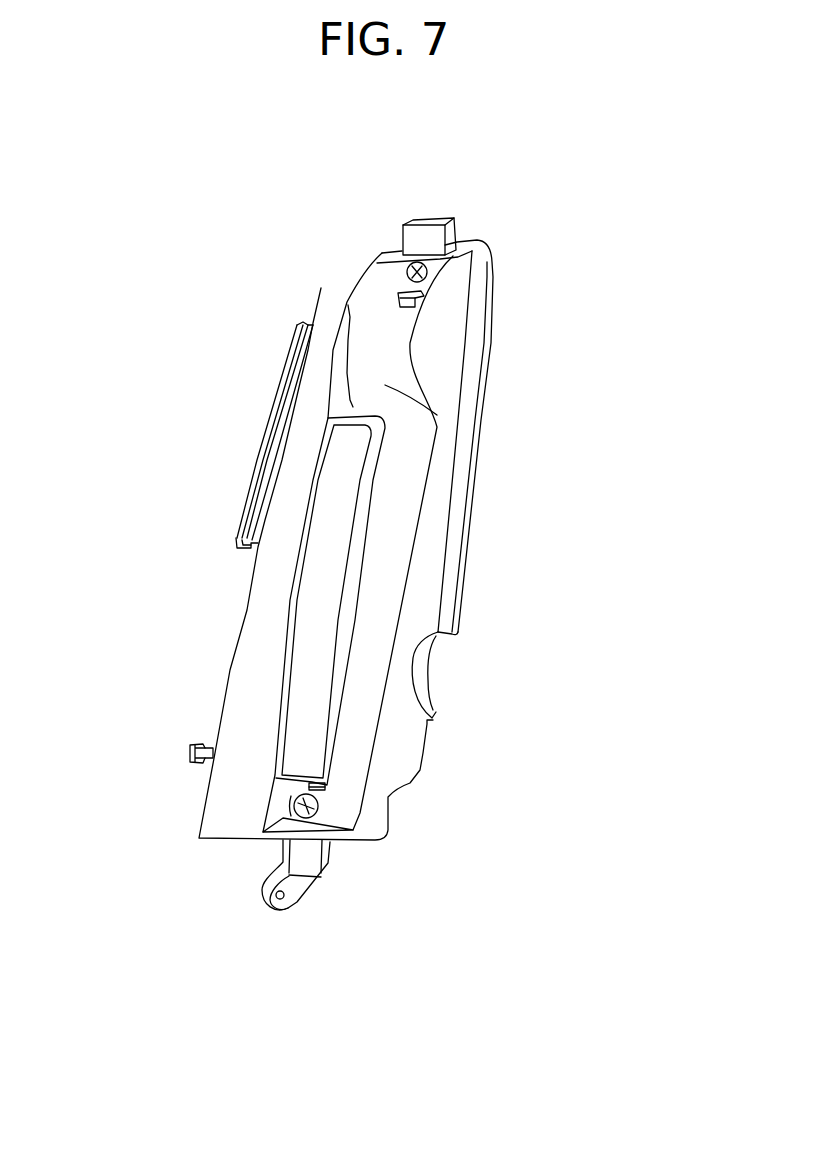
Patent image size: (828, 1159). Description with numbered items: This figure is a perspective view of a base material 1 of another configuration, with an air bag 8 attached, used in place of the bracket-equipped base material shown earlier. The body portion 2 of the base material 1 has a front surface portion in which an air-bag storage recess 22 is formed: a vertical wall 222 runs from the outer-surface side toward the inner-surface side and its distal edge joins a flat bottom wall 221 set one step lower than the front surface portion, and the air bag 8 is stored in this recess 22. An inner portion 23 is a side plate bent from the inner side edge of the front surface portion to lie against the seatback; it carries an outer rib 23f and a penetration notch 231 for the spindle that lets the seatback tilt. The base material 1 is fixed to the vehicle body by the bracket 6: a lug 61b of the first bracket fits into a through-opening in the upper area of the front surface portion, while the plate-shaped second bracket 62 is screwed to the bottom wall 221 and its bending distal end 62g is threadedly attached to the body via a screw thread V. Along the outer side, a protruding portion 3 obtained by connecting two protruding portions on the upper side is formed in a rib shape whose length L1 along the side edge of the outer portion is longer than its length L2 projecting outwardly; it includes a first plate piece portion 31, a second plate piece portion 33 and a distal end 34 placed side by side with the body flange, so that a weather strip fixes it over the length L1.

The base material 1 is at (393, 499).
The body portion 2 is at (485, 245).
The screw thread V is at (410, 268).
The lug 61b is at (398, 302).
The length projecting outwardly L2 is at (365, 308).
The length along the side edge L1 is at (310, 324).
The distal end 34 is at (250, 493).
The protruding portion 3 is at (190, 546).
The second plate piece portion 33 is at (238, 545).
The first plate piece portion 31 is at (213, 747).
The inner portion 23 is at (457, 311).
The outer rib 23f is at (490, 361).
The vertical wall 222 is at (350, 407).
The bottom wall 221 is at (400, 494).
The air-bag storage recess 22 is at (540, 492).
The air bag 8 is at (333, 573).
The penetration notch 231 is at (420, 674).
The second bracket 62 is at (345, 913).
The bracket 6 is at (345, 913).
The bending distal end 62g is at (298, 892).